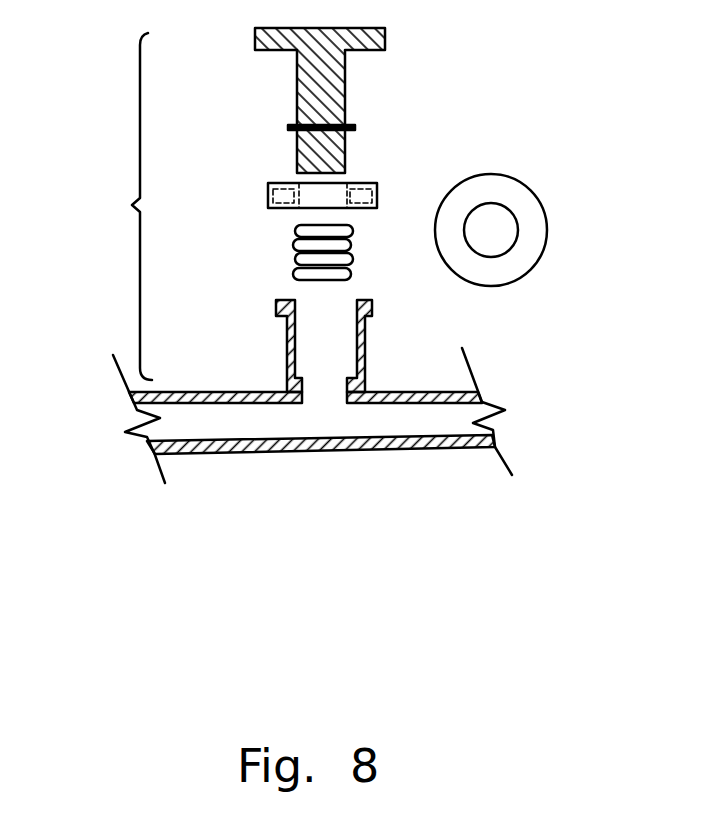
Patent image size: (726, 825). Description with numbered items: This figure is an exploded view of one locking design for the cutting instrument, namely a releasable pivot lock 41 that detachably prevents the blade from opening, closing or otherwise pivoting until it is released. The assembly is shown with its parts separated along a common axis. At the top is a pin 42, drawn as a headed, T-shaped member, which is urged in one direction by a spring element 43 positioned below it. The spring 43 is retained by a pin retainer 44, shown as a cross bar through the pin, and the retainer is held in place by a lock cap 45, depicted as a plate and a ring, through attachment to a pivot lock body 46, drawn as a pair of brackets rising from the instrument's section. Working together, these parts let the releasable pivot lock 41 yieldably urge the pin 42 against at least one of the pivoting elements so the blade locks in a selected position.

The releasable pivot lock 41 is at (121, 206).
The pin 42 is at (297, 106).
The spring element 43 is at (296, 243).
The pin retainer 44 is at (288, 128).
The lock cap 45 is at (465, 181).
The pivot lock body 46 is at (282, 350).